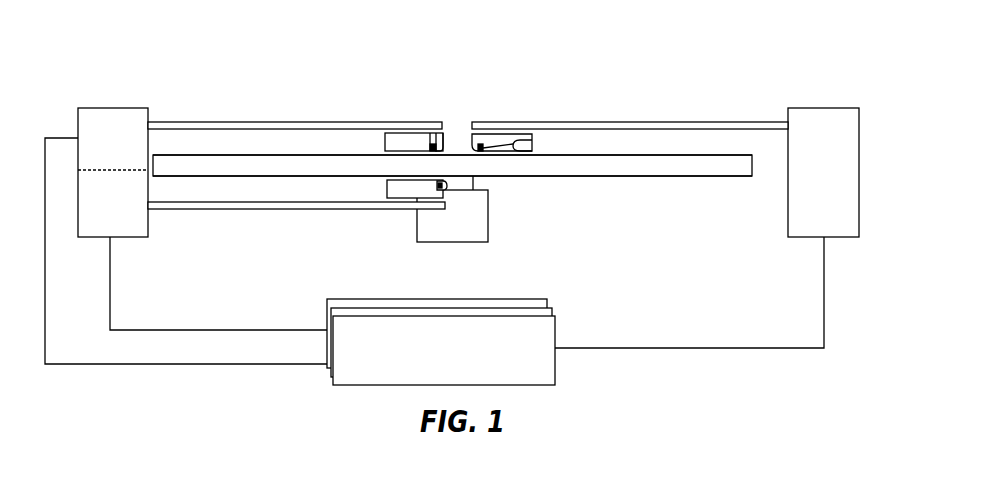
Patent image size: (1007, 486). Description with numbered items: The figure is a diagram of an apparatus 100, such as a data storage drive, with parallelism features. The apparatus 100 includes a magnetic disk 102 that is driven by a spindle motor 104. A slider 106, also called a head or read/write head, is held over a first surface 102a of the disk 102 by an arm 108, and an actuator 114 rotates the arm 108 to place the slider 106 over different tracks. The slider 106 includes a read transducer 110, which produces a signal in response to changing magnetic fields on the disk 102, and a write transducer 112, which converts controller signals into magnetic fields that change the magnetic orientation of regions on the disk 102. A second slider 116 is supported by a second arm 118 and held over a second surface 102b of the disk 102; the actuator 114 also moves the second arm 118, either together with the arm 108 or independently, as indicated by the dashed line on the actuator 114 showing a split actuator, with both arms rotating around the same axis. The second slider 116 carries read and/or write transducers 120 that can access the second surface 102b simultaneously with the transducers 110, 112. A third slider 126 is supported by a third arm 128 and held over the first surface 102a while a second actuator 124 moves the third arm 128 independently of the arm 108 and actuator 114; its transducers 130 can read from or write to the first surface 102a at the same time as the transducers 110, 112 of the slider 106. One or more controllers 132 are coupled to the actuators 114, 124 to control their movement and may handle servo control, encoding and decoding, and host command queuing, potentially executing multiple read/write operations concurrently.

The apparatus 100 is at (586, 58).
The magnetic disk 102 is at (713, 167).
The first surface 102a is at (615, 155).
The second surface 102b is at (640, 176).
The spindle motor 104 is at (433, 242).
The slider 106 is at (395, 141).
The arm 108 is at (276, 122).
The read transducer 110 is at (441, 133).
The write transducer 112 is at (430, 147).
The actuator 114 is at (104, 112).
The second slider 116 is at (394, 198).
The second arm 118 is at (263, 209).
The read and/or write transducers 120 is at (446, 186).
The second actuator 124 is at (813, 108).
The third slider 126 is at (500, 134).
The third arm 128 is at (643, 122).
The read and/or write transducers 130 is at (532, 143).
The controllers 132 is at (515, 308).